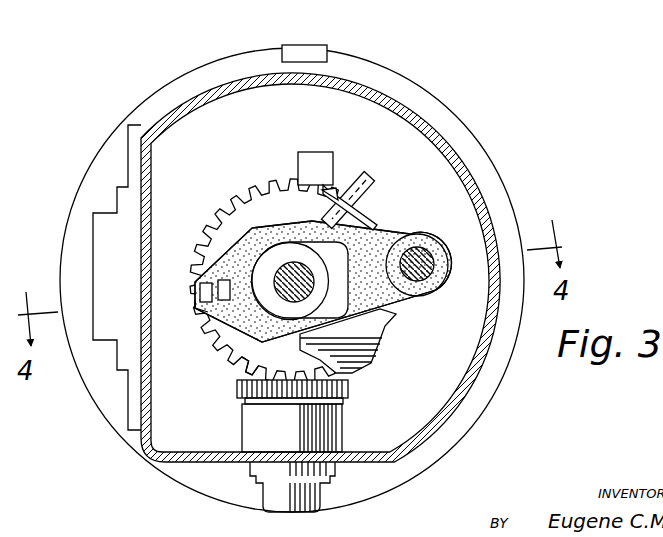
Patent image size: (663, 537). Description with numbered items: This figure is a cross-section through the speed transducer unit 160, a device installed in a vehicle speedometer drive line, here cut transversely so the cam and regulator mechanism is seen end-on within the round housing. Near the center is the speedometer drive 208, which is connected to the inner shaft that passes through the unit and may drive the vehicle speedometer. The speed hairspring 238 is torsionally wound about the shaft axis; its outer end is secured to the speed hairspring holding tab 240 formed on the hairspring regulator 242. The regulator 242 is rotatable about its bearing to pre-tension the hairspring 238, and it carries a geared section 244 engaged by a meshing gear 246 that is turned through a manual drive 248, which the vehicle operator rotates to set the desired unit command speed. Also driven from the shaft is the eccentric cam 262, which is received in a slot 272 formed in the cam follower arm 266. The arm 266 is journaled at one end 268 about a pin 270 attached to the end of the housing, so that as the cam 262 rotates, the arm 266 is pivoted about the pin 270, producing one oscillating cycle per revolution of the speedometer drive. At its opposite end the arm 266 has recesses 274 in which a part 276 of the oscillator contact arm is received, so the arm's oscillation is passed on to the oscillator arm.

The speed transducer unit 160 is at (449, 129).
The speedometer drive 208 is at (294, 262).
The speed hairspring 238 is at (330, 196).
The speed hairspring holding tab 240 is at (370, 186).
The hairspring regulator 242 is at (382, 352).
The geared section 244 is at (220, 354).
The meshing gear 246 is at (350, 393).
The manual drive 248 is at (262, 492).
The eccentric cam 262 is at (297, 318).
The cam follower arm 266 is at (243, 368).
The journal end 268 is at (436, 291).
The pin 270 is at (423, 247).
The slot 272 is at (340, 318).
The recesses 274 is at (214, 282).
The part of oscillator arm 276 is at (207, 304).